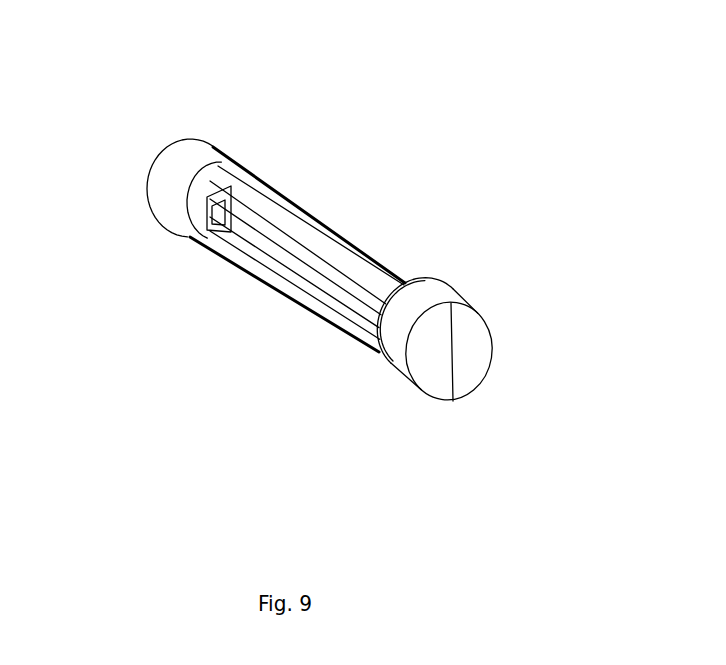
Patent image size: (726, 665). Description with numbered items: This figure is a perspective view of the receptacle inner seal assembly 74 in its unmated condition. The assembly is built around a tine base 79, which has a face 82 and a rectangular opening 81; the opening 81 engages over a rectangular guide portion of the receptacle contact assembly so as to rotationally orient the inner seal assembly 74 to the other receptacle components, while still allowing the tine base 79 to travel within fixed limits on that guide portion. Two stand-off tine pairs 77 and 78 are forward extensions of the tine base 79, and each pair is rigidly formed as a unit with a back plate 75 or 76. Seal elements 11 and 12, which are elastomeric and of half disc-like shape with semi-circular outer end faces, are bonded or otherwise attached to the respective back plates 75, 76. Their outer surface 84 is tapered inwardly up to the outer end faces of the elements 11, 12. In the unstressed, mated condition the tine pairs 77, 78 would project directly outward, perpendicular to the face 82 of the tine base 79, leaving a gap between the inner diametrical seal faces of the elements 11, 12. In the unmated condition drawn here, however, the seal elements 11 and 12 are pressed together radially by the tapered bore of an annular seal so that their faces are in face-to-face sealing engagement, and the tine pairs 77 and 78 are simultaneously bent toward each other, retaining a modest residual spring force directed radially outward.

The receptacle inner seal assembly 74 is at (195, 473).
The back plate 75 is at (381, 369).
The back plate 76 is at (443, 282).
The stand-off tine pair 77 is at (252, 273).
The stand-off tine pair 78 is at (310, 223).
The tine base 79 is at (205, 155).
The rectangular opening 81 is at (189, 236).
The face 82 is at (193, 210).
The outer surface 84 is at (416, 302).
The seal element 11 is at (435, 358).
The seal element 12 is at (467, 352).